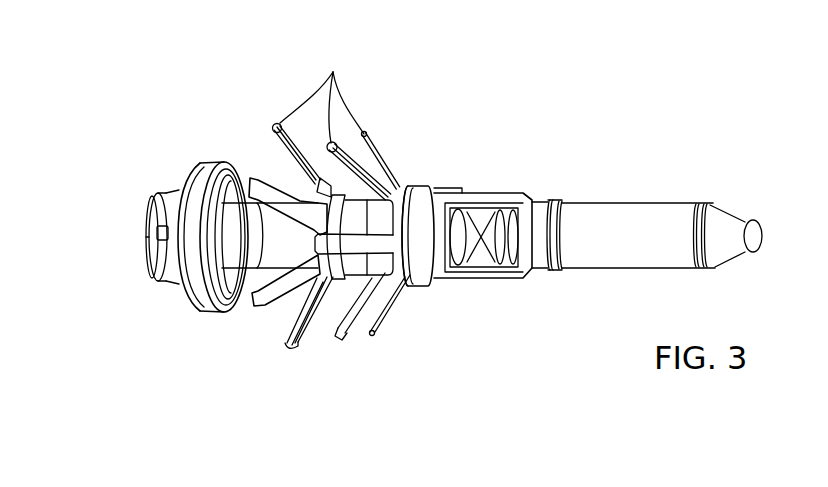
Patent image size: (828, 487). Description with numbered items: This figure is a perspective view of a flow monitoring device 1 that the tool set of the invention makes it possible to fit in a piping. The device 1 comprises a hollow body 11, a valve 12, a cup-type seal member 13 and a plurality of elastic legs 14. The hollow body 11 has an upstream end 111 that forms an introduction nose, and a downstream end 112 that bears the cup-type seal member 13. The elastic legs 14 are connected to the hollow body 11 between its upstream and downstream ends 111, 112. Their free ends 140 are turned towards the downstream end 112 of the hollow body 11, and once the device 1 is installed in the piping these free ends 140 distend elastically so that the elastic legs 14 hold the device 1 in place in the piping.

The flow monitoring device 1 is at (240, 108).
The hollow body 11 is at (238, 260).
The valve 12 is at (495, 182).
The cup-type seal member 13 is at (200, 168).
The elastic legs 14 is at (318, 350).
The upstream end 111 is at (730, 207).
The downstream end 112 is at (153, 268).
The free ends 140 is at (322, 95).